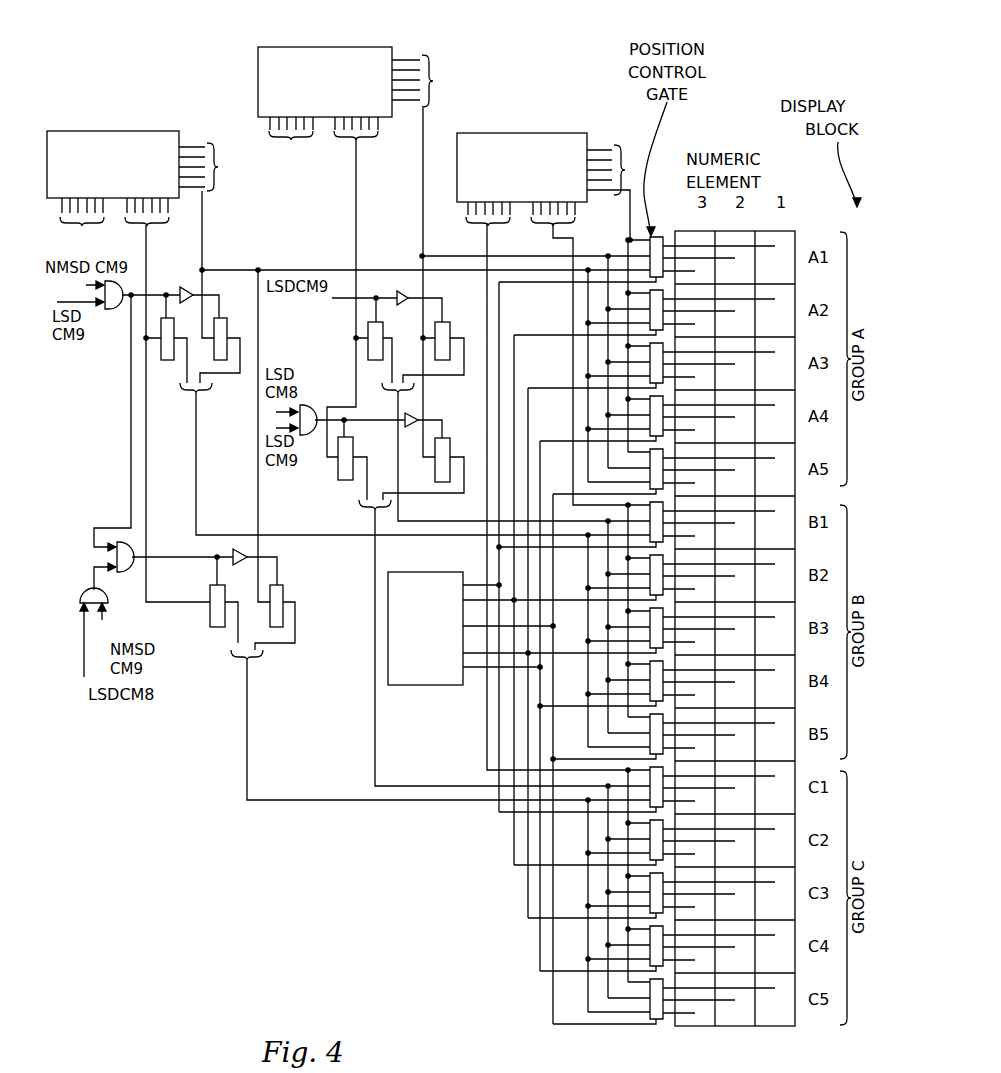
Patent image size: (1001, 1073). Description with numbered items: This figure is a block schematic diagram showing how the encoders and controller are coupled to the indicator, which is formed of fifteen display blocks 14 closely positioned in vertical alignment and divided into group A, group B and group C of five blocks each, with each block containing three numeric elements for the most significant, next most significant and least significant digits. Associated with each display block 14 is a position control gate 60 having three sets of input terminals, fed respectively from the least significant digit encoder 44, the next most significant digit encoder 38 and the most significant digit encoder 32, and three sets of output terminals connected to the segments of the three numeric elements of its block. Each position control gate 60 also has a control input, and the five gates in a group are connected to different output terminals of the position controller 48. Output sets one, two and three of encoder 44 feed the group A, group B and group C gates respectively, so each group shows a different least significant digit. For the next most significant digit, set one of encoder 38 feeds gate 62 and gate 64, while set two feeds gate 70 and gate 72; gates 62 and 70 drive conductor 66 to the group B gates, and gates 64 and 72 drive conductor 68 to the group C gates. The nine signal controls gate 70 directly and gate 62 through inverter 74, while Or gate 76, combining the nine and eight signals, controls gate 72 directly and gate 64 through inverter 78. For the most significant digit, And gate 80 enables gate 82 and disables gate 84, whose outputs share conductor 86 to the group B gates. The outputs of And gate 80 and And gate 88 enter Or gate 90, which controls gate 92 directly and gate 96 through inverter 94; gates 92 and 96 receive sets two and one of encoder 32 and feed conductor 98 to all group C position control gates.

The display block 14 is at (800, 448).
The most significant digit encoder 32 is at (160, 132).
The next most significant digit encoder 38 is at (351, 48).
The least significant digit encoder 44 is at (518, 132).
The position controller 48 is at (423, 572).
The position control gate 60 is at (651, 236).
The gate 62 is at (448, 326).
The gate 64 is at (440, 483).
The conductor 66 is at (417, 522).
The conductor 68 is at (374, 566).
The gate 70 is at (383, 336).
The gate 72 is at (353, 452).
The inverter 74 is at (400, 292).
The Or gate 76 is at (314, 405).
The inverter 78 is at (417, 415).
The And gate 80 is at (116, 310).
The gate 82 is at (176, 360).
The gate 84 is at (224, 318).
The conductor 86 is at (193, 460).
The And gate 88 is at (86, 592).
The Or gate 90 is at (126, 572).
The gate 92 is at (213, 627).
The inverter 94 is at (243, 541).
The gate 96 is at (280, 592).
The conductor 98 is at (248, 705).